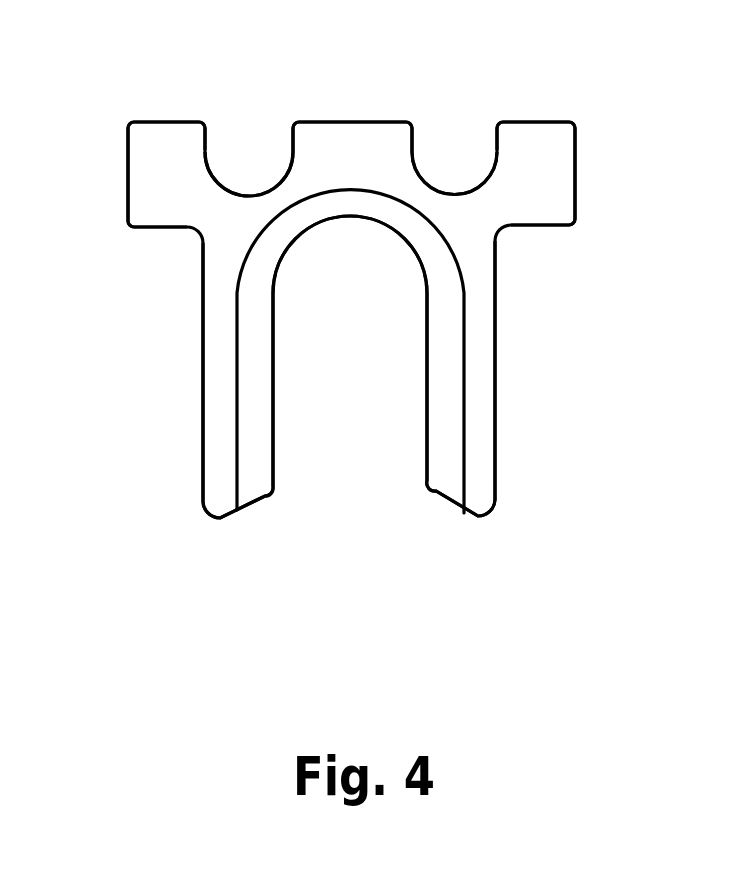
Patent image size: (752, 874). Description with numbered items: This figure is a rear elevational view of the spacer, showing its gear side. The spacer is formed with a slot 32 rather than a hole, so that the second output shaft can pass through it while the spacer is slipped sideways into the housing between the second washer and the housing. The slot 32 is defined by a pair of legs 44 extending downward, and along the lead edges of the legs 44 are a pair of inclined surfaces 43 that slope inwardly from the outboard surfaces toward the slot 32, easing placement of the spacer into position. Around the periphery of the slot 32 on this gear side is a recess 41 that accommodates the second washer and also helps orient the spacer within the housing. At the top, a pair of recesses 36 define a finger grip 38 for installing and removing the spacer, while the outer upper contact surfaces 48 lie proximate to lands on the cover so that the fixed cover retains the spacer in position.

The slot 32 is at (370, 358).
The recesses 36 is at (248, 194).
The finger grip 38 is at (352, 118).
The recess 41 is at (443, 403).
The inclined surfaces 43 is at (245, 505).
The legs 44 is at (213, 388).
The contact surfaces 48 is at (170, 118).